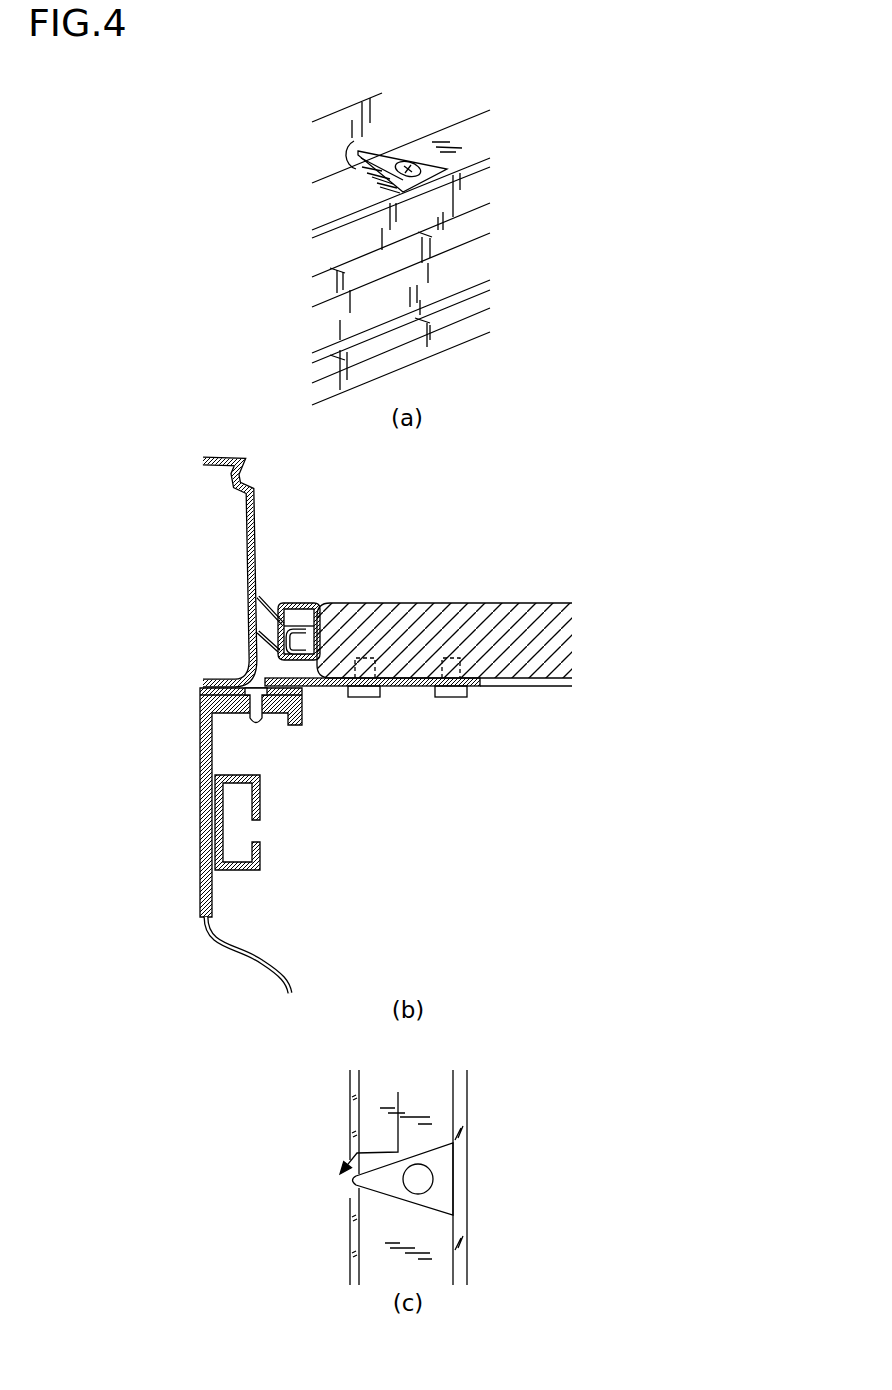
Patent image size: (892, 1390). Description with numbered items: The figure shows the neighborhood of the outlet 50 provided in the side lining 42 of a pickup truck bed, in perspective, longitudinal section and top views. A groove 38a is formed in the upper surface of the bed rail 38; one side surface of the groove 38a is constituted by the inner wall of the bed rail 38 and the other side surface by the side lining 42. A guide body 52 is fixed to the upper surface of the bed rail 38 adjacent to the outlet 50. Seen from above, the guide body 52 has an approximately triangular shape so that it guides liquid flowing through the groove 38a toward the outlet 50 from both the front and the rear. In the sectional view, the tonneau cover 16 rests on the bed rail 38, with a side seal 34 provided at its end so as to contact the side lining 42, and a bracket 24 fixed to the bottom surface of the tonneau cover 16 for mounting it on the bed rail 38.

The tonneau cover 16 is at (445, 620).
The bracket 24 is at (320, 688).
The side seal 34 is at (297, 602).
The bed rail 38 is at (465, 265).
The groove 38a is at (475, 138).
The side lining 42 is at (393, 112).
The outlet 50 is at (355, 152).
The guide body 52 is at (470, 170).